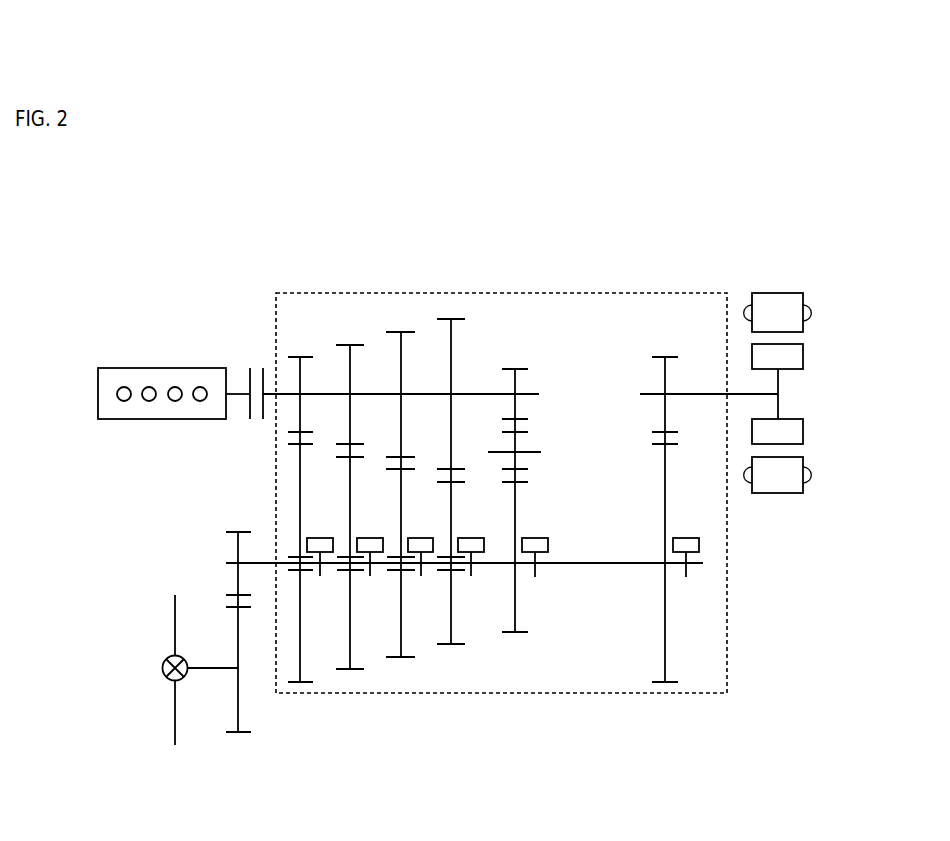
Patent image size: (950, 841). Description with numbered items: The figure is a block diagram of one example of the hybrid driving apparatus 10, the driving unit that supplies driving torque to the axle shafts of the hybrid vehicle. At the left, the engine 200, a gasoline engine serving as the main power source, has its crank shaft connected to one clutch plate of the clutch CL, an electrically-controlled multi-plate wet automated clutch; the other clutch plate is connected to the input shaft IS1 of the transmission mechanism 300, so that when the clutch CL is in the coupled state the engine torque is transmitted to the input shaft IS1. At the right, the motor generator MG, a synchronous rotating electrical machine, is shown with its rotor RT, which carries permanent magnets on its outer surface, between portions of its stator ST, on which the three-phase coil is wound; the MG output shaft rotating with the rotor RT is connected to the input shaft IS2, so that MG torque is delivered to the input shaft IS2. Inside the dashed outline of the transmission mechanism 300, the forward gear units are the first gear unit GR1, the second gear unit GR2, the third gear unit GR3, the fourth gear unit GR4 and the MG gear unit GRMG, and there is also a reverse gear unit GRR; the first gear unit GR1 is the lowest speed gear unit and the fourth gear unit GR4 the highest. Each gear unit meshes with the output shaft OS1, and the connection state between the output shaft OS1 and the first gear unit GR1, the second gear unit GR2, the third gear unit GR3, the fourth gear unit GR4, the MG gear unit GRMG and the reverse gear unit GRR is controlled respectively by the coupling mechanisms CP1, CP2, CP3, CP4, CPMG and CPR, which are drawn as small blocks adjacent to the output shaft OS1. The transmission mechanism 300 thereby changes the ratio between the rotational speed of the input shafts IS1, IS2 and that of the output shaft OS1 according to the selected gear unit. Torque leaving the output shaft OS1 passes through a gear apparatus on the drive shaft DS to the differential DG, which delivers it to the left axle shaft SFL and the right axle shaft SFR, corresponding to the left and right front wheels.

The hybrid driving apparatus 10 is at (484, 190).
The engine 200 is at (124, 368).
The clutch CL is at (248, 366).
The first gear unit GR1 is at (300, 345).
The second gear unit GR2 is at (349, 332).
The third gear unit GR3 is at (400, 322).
The fourth gear unit GR4 is at (450, 310).
The reverse gear unit GRR is at (515, 358).
The MG gear unit GRMG is at (667, 345).
The input shaft IS1 is at (539, 393).
The input shaft IS2 is at (640, 393).
The stator ST is at (778, 393).
The rotor RT is at (777, 394).
The motor generator MG is at (805, 406).
The output shaft OS1 is at (617, 565).
The coupling mechanism CP1 is at (323, 544).
The coupling mechanism CP2 is at (373, 544).
The coupling mechanism CP3 is at (422, 544).
The coupling mechanism CP4 is at (473, 544).
The coupling mechanism CPR is at (543, 549).
The coupling mechanism CPMG is at (695, 548).
The drive shaft DS is at (215, 670).
The differential DG is at (161, 672).
The right axle shaft SFR is at (164, 612).
The left axle shaft SFL is at (164, 727).
The transmission mechanism 300 is at (540, 697).